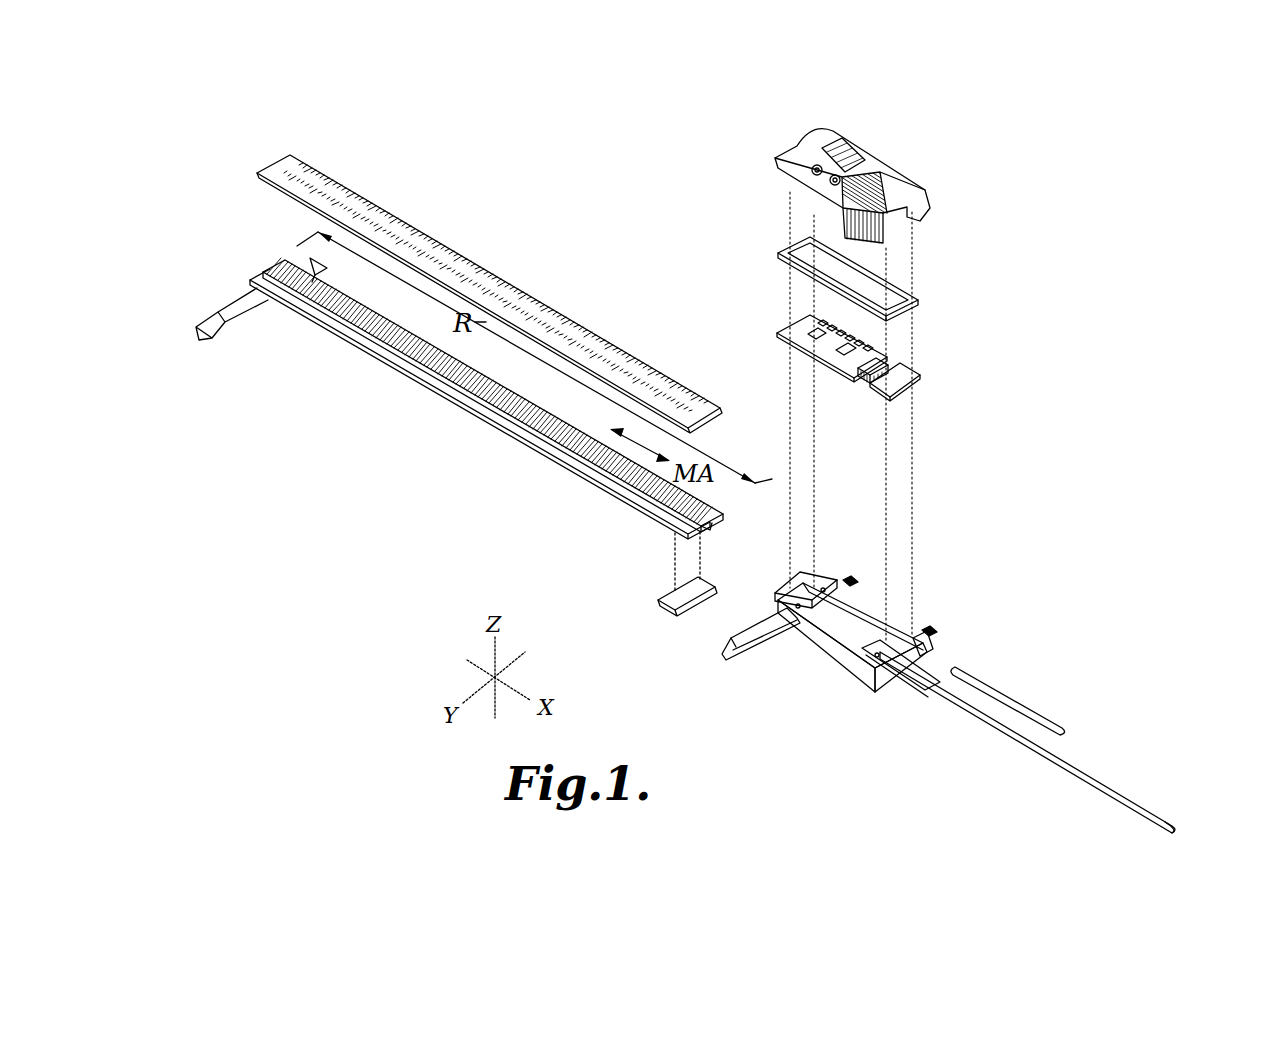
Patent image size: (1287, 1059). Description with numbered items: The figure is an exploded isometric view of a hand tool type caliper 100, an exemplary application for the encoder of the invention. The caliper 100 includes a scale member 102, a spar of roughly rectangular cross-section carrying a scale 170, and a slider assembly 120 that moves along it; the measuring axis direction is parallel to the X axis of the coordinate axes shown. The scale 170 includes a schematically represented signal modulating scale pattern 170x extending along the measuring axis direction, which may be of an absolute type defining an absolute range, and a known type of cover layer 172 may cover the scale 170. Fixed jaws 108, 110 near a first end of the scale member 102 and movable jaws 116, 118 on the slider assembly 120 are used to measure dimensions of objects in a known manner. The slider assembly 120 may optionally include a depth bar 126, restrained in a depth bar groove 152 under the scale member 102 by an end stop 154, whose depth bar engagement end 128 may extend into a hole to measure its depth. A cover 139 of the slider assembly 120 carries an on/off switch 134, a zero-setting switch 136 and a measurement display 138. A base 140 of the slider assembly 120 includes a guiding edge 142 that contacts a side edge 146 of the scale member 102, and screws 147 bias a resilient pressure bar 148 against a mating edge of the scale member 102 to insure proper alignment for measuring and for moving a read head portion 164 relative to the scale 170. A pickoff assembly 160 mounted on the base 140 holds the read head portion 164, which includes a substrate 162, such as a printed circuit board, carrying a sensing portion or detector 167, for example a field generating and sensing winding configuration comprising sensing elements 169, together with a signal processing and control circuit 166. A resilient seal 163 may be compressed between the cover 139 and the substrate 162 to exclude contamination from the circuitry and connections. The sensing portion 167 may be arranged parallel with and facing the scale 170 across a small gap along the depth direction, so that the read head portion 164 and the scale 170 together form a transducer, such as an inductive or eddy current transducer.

The caliper 100 is at (375, 522).
The scale member 102 is at (453, 415).
The fixed jaw 108 is at (215, 308).
The fixed jaw 110 is at (322, 264).
The movable jaw 116 is at (767, 632).
The movable jaw 118 is at (818, 565).
The slider assembly 120 is at (991, 545).
The depth bar 126 is at (1070, 742).
The depth bar engagement end 128 is at (1183, 828).
The on/off switch 134 is at (815, 164).
The zero-setting switch 136 is at (840, 175).
The measurement display 138 is at (835, 148).
The cover 139 is at (865, 162).
The base 140 is at (848, 668).
The guiding edge 142 is at (935, 668).
The side edge 146 is at (553, 465).
The screws 147 is at (852, 582).
The resilient pressure bar 148 is at (1008, 691).
The depth bar groove 152 is at (707, 527).
The end stop 154 is at (668, 597).
The pickoff assembly 160 is at (872, 244).
The substrate 162 is at (797, 332).
The resilient seal 163 is at (920, 295).
The read head portion 164 is at (792, 344).
The signal processing and control circuit 166 is at (806, 322).
The sensing portion 167 is at (860, 368).
The sensing elements 169 is at (875, 384).
The scale 170 is at (503, 428).
The signal modulating scale pattern 170x is at (452, 393).
The cover layer 172 is at (490, 292).